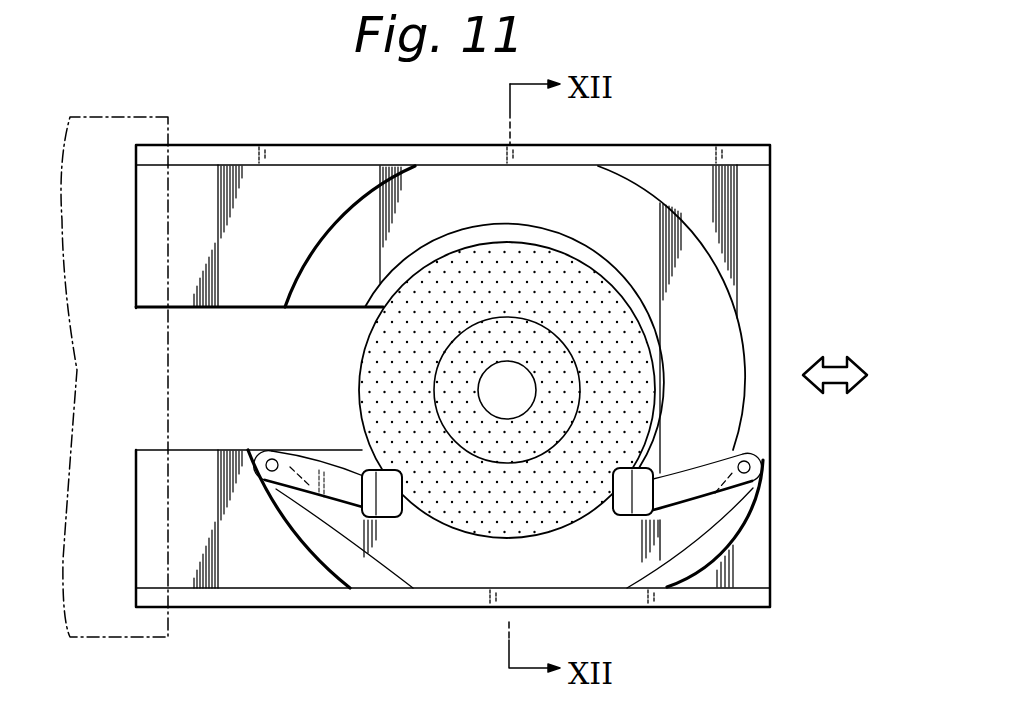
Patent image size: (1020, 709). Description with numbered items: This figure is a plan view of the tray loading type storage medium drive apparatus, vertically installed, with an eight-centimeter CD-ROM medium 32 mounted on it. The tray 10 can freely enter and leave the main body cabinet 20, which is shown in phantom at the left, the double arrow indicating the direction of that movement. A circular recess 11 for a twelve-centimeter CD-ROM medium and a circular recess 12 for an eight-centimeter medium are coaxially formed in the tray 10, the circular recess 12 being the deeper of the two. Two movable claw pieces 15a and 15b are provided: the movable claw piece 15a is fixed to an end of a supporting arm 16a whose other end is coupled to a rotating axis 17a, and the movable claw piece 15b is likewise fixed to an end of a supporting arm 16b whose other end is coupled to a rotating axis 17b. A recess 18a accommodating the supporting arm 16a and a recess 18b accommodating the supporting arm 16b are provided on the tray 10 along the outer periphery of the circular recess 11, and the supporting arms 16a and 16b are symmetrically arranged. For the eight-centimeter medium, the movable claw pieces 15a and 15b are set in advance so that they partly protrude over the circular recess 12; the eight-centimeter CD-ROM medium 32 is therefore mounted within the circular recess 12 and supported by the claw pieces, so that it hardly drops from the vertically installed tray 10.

The tray 10 is at (752, 186).
The circular recess 11 is at (705, 284).
The circular recess 12 is at (668, 343).
The movable claw piece 15a is at (388, 520).
The movable claw piece 15b is at (614, 522).
The supporting arm 16a is at (303, 485).
The supporting arm 16b is at (752, 492).
The rotating axis 17a is at (272, 458).
The rotating axis 17b is at (747, 460).
The recess 18a is at (313, 533).
The recess 18b is at (716, 538).
The main body cabinet 20 is at (112, 117).
The 8-cm CD-ROM medium 32 is at (441, 277).